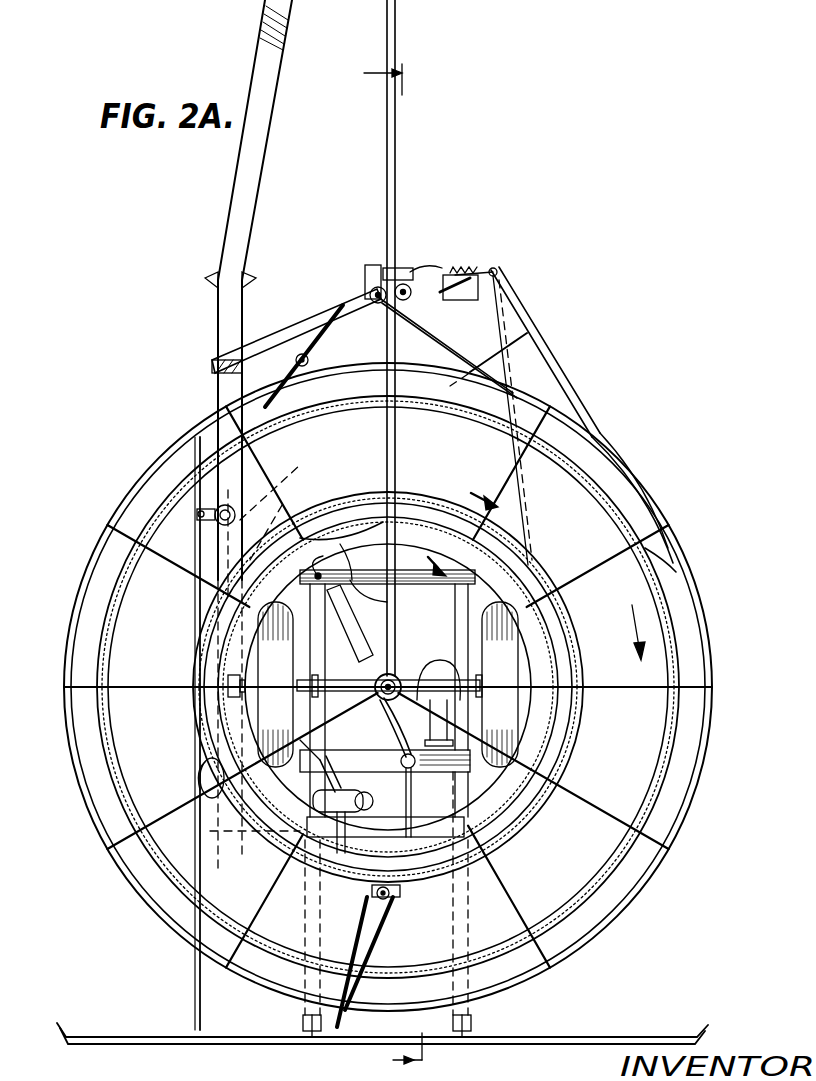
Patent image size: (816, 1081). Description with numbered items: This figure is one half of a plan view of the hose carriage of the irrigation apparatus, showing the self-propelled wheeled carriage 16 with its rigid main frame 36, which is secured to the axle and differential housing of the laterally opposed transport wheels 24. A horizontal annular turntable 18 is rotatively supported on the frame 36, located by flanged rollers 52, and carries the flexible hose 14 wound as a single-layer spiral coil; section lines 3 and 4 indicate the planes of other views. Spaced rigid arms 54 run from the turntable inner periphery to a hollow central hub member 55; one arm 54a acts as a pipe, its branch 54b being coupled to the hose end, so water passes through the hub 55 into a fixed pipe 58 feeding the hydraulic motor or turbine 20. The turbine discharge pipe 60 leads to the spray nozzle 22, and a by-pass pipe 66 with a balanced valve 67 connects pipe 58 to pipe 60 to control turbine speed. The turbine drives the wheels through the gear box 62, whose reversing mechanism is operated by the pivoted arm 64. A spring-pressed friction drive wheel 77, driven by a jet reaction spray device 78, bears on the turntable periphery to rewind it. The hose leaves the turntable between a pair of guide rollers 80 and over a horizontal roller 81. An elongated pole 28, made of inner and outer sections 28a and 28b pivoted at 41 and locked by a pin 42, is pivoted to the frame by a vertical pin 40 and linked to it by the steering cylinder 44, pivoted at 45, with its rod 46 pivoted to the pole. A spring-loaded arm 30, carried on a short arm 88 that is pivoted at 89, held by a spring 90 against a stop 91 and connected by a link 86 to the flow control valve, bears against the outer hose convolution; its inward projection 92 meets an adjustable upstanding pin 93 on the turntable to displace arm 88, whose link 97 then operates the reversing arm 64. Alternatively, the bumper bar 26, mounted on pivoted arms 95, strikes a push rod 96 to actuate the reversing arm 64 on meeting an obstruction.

The section line 3- 3 is at (385, 567).
The section line 4- 4 is at (461, 519).
The flexible hose 14 is at (386, 176).
The self-propelled wheeled carriage 16 is at (617, 440).
The annular turntable 18 is at (548, 637).
The hydraulic motor (turbine) 20 is at (374, 804).
The spray nozzle 22 is at (394, 893).
The transport wheels 24 is at (288, 680).
The bumper bar 26 is at (590, 1040).
The pole 28 is at (232, 204).
The inner pole section 28a is at (231, 236).
The outer pole section 28b is at (218, 320).
The spring loaded pivoted arm 30 is at (556, 380).
The main frame 36 is at (457, 620).
The vertical pivot pin 40 is at (268, 507).
The pivotal connection 41 is at (252, 281).
The pin 42 is at (210, 281).
The steering cylinder 44 is at (370, 630).
The vertical pivot pin 45 is at (318, 573).
The rod 46 is at (280, 478).
The flanged rollers 52 is at (210, 706).
The rigid arms 54 is at (230, 724).
The pipe arm 54a is at (393, 614).
The branch 54b is at (392, 520).
The central vertical hub member 55 is at (401, 682).
The pipe 58 is at (374, 728).
The discharge pipe 60 is at (292, 840).
The gear box 62 is at (472, 762).
The reversing arm 64 is at (318, 792).
The by-pass pipe 66 is at (456, 712).
The balanced valve 67 is at (401, 762).
The friction drive wheel 77 is at (314, 364).
The jet reaction spray device 78 is at (301, 352).
The guide rollers 80 is at (369, 291).
The horizontal roller 81 is at (374, 264).
The link 86 is at (530, 349).
The short arm 88 is at (493, 268).
The pivot 89 is at (457, 300).
The spring 90 is at (460, 267).
The stop 91 is at (477, 300).
The inward projection 92 is at (640, 566).
The upstanding pin 93 is at (212, 650).
The pivoted arms 95 is at (302, 1034).
The push rod 96 is at (195, 978).
The link 97 is at (178, 566).